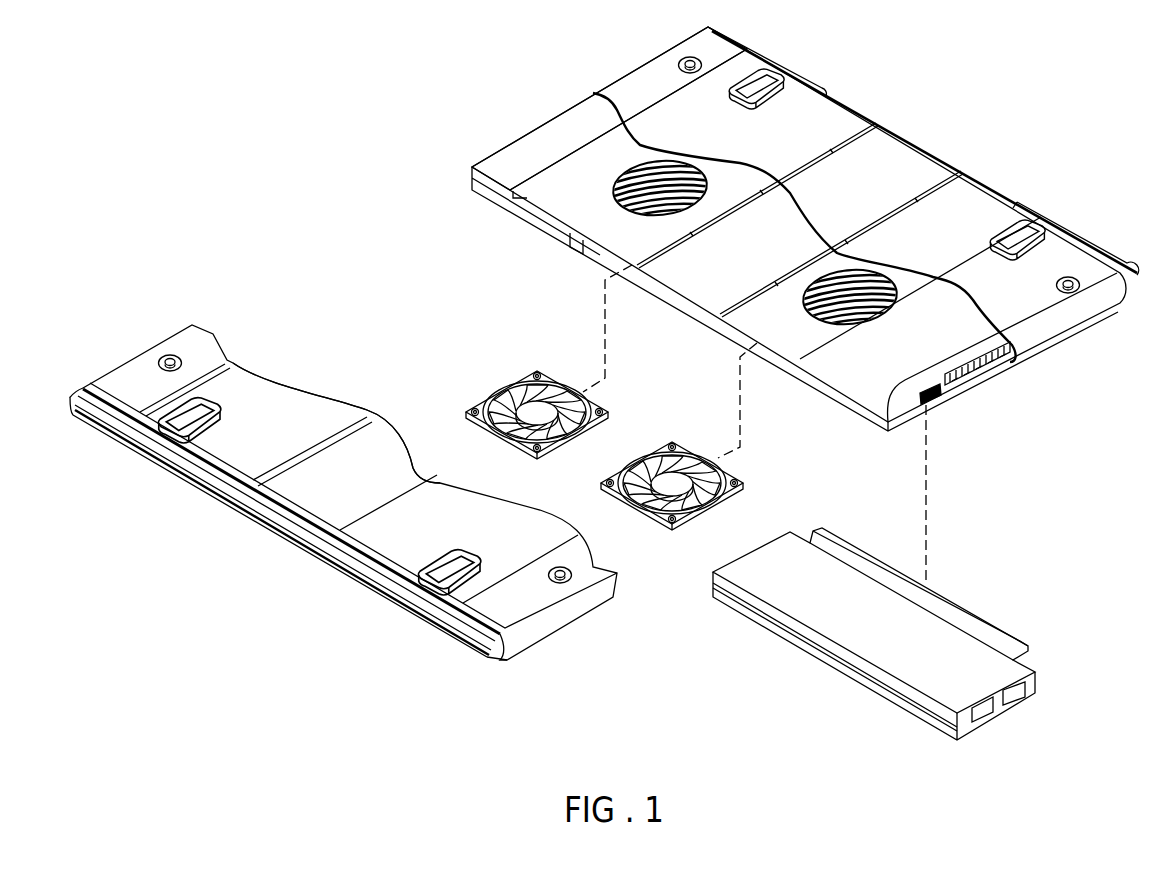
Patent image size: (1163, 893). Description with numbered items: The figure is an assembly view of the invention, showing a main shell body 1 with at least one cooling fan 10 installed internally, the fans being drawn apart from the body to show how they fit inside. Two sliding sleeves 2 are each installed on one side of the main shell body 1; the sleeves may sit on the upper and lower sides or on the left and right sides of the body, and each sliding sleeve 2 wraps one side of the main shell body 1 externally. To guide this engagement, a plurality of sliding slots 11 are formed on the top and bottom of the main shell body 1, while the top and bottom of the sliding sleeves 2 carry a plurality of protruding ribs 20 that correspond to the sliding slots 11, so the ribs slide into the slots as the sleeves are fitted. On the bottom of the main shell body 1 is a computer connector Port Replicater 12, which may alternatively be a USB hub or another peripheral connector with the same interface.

The main shell body 1 is at (880, 170).
The sliding slots 11 is at (537, 190).
The cooling fan 10 is at (538, 415).
The sliding sleeve 2 is at (323, 500).
The protruding ribs 20 is at (300, 457).
The Port Replicater 12 is at (863, 625).